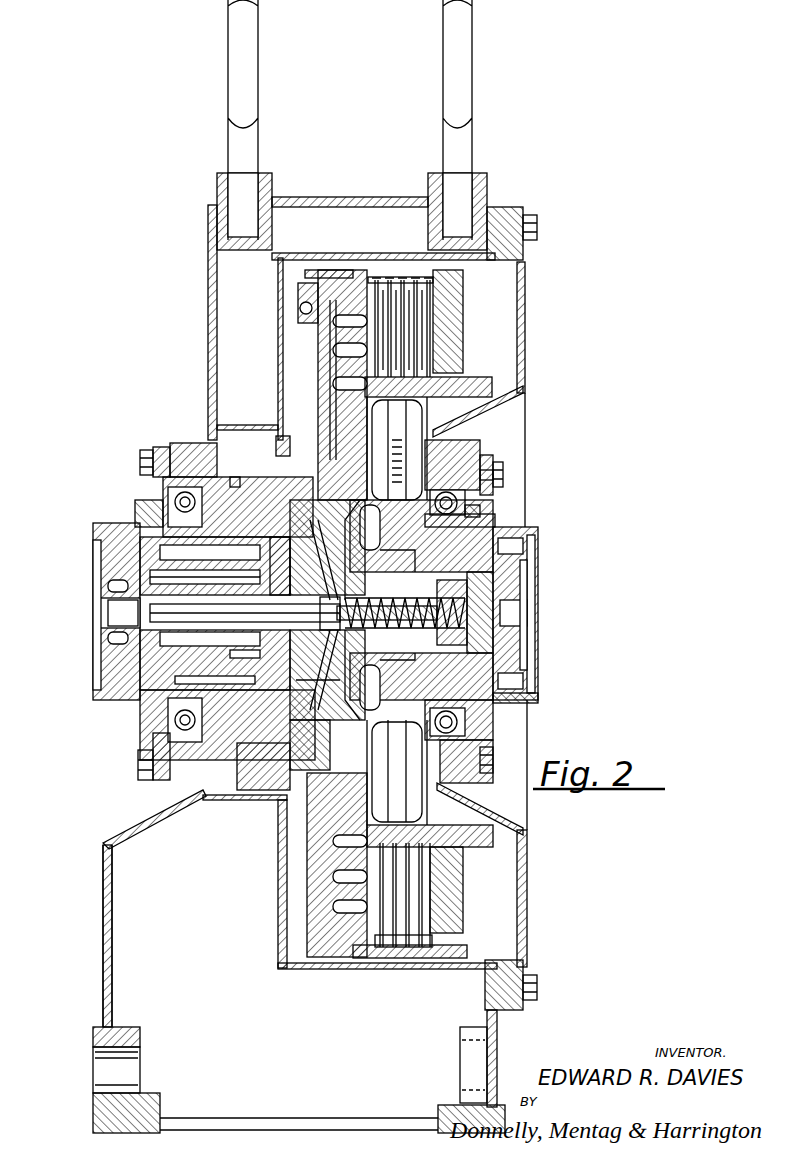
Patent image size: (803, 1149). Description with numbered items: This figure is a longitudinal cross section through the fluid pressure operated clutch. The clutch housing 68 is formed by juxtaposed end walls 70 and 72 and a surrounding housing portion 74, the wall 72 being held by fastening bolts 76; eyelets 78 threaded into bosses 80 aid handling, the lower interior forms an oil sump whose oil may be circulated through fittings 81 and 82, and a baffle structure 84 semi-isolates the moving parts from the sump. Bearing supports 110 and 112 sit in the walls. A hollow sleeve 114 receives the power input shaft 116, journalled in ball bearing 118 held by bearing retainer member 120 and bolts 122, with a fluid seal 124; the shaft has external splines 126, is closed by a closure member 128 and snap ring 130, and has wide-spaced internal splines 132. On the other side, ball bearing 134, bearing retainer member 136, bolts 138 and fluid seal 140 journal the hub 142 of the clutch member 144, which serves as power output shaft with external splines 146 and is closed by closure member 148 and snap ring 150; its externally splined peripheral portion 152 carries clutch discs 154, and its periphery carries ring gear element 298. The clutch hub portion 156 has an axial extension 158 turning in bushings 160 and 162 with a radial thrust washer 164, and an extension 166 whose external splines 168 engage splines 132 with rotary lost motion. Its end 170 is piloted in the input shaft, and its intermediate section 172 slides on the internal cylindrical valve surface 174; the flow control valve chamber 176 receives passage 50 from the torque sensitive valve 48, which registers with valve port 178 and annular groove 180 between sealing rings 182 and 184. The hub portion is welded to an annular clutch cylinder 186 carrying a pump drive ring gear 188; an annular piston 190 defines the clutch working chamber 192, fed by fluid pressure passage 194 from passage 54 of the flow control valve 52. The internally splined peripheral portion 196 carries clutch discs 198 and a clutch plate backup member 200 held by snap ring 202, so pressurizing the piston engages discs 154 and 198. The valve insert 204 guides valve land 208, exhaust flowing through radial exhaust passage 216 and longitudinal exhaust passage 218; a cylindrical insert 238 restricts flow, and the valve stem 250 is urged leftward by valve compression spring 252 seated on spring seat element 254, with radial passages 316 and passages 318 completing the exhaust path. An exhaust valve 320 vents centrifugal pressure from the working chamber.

The torque sensitive valve 48 is at (260, 725).
The passage 50 is at (272, 575).
The flow control valve 52 is at (319, 615).
The passage 54 is at (360, 515).
The clutch housing 68 is at (200, 259).
The end wall 70 is at (208, 304).
The end wall 72 is at (522, 358).
The housing portion 74 is at (328, 197).
The fastening bolts 76 is at (537, 225).
The eyelets 78 is at (255, 58).
The bosses 80 is at (218, 183).
The fitting 81 is at (140, 1060).
The fitting 82 is at (468, 1057).
The baffle structure 84 is at (279, 890).
The bearing support 110 is at (185, 445).
The bearing support 112 is at (450, 452).
The hollow sleeve 114 is at (232, 477).
The power input shaft 116 is at (238, 500).
The ball bearing 118 is at (170, 500).
The bearing retainer member 120 is at (165, 455).
The bolts 122 is at (148, 460).
The fluid seal 124 is at (140, 510).
The external splines 126 is at (98, 690).
The closure member 128 is at (100, 583).
The snap ring 130 is at (100, 635).
The internal splines 132 is at (205, 574).
The ball bearing 134 is at (478, 500).
The bearing retainer member 136 is at (481, 480).
The bolts 138 is at (484, 462).
The fluid seal 140 is at (472, 515).
The hub 142 is at (500, 548).
The clutch member 144 is at (420, 434).
The external splines 146 is at (530, 700).
The closure member 148 is at (500, 628).
The snap ring 150 is at (500, 656).
The externally splined peripheral portion 152 is at (458, 378).
The clutch discs 154 is at (415, 322).
The clutch hub portion 156 is at (390, 615).
The axial extension 158 is at (470, 580).
The bushing 160 is at (382, 573).
The bushing 162 is at (447, 562).
The radial thrust washer 164 is at (388, 735).
The extension 166 is at (160, 690).
The external splines 168 is at (165, 722).
The end 170 is at (100, 615).
The intermediate section 172 is at (227, 725).
The internal cylindrical valve surface 174 is at (327, 547).
The flow control valve chamber 176 is at (327, 641).
The valve port 178 is at (286, 540).
The annular groove 180 is at (325, 735).
The sealing ring 182 is at (255, 680).
The sealing ring 184 is at (318, 667).
The annular clutch cylinder 186 is at (320, 372).
The pump drive ring gear 188 is at (280, 440).
The annular piston 190 is at (330, 334).
The clutch working chamber 192 is at (335, 352).
The fluid pressure passage 194 is at (380, 470).
The internally splined peripheral portion 196 is at (418, 256).
The clutch discs 198 is at (405, 305).
The clutch plate backup member 200 is at (425, 345).
The snap ring 202 is at (462, 270).
The valve insert 204 is at (100, 600).
The valve land 208 is at (222, 625).
The radial exhaust passage 216 is at (245, 652).
The longitudinal exhaust passage 218 is at (380, 634).
The cylindrical insert 238 is at (163, 580).
The valve stem 250 is at (405, 596).
The valve compression spring 252 is at (421, 676).
The spring seat element 254 is at (470, 605).
The ring gear element 298 is at (470, 862).
The radial passages 316 is at (415, 678).
The passages 318 is at (375, 550).
The exhaust valve 320 is at (302, 290).